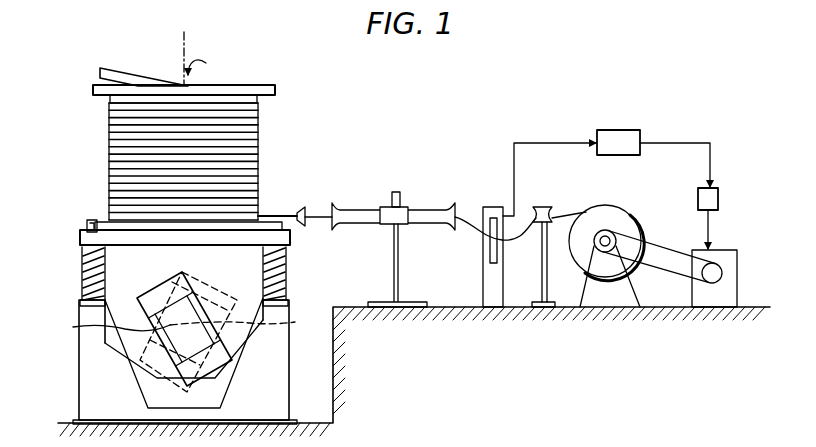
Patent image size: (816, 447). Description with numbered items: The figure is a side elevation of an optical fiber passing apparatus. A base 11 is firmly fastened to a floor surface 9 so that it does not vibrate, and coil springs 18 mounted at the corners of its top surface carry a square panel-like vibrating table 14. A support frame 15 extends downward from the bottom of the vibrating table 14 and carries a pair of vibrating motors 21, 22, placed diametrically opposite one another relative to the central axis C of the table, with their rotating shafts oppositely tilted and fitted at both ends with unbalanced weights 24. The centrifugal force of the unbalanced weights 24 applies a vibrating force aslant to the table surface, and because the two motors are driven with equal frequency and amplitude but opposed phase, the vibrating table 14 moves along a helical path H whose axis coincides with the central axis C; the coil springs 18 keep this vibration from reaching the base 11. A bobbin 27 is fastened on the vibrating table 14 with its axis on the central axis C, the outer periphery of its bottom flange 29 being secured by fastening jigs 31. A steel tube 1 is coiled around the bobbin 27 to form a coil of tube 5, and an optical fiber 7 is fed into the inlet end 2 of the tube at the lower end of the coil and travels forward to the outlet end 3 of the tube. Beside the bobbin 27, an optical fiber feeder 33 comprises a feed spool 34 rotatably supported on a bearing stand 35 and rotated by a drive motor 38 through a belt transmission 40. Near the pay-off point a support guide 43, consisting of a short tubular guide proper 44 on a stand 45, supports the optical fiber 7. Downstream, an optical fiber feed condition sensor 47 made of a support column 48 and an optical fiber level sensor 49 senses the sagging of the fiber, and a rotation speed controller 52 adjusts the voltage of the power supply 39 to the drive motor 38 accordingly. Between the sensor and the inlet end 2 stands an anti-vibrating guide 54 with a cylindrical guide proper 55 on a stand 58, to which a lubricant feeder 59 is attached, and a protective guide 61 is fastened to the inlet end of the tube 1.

The tube 1 is at (262, 115).
The inlet end of the tube 2 is at (288, 214).
The outlet end of the tube 3 is at (108, 67).
The coil of tube 5 is at (266, 157).
The optical fiber 7 is at (325, 216).
The floor surface 9 is at (66, 420).
The base 11 is at (290, 346).
The vibrating table 14 is at (81, 236).
The support frame 15 is at (147, 271).
The coil springs 18 is at (83, 273).
The vibrating motor 21 is at (110, 325).
The vibrating motor 22 is at (294, 322).
The unbalanced weights 24 is at (148, 292).
The bobbin 27 is at (255, 84).
The bottom flange 29 is at (100, 222).
The fastening jigs 31 is at (89, 220).
The optical fiber feeder 33 is at (634, 211).
The feed spool 34 is at (604, 210).
The bearing stand 35 is at (600, 312).
The drive motor 38 is at (722, 250).
The power supply 39 is at (718, 197).
The belt transmission 40 is at (665, 243).
The support guide 43 is at (541, 205).
The guide proper 44 is at (543, 229).
The stand 45 is at (540, 270).
The optical fiber feed condition sensor 47 is at (481, 200).
The support column 48 is at (492, 207).
The optical fiber level sensor 49 is at (490, 225).
The rotation speed controller 52 is at (625, 135).
The anti-vibrating guide 54 is at (383, 226).
The guide proper 55 is at (418, 209).
The stand 58 is at (399, 268).
The lubricant feeder 59 is at (394, 193).
The protective guide 61 is at (305, 207).
The central axis C is at (187, 53).
The helical H is at (194, 76).